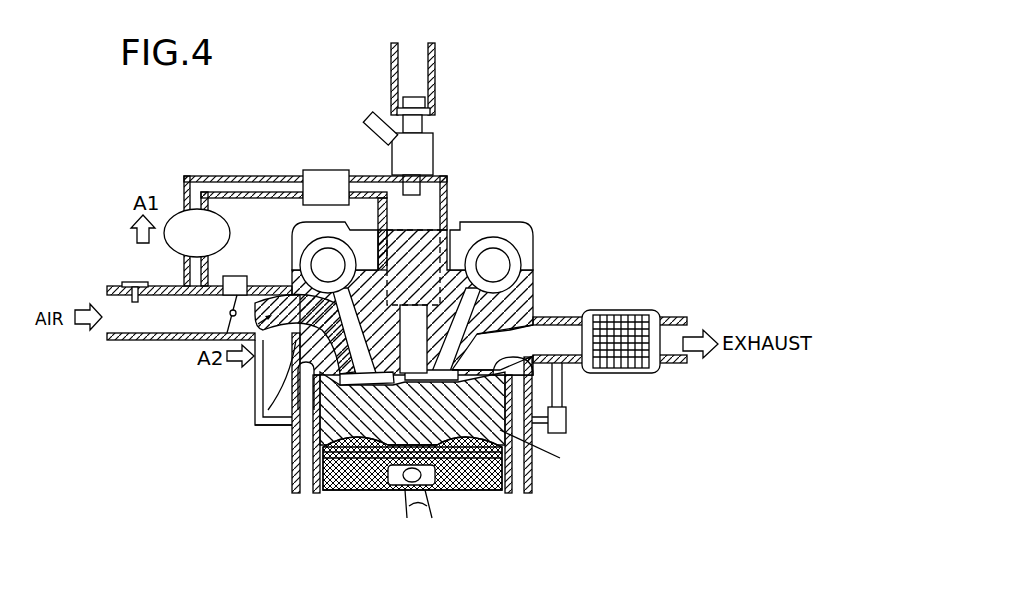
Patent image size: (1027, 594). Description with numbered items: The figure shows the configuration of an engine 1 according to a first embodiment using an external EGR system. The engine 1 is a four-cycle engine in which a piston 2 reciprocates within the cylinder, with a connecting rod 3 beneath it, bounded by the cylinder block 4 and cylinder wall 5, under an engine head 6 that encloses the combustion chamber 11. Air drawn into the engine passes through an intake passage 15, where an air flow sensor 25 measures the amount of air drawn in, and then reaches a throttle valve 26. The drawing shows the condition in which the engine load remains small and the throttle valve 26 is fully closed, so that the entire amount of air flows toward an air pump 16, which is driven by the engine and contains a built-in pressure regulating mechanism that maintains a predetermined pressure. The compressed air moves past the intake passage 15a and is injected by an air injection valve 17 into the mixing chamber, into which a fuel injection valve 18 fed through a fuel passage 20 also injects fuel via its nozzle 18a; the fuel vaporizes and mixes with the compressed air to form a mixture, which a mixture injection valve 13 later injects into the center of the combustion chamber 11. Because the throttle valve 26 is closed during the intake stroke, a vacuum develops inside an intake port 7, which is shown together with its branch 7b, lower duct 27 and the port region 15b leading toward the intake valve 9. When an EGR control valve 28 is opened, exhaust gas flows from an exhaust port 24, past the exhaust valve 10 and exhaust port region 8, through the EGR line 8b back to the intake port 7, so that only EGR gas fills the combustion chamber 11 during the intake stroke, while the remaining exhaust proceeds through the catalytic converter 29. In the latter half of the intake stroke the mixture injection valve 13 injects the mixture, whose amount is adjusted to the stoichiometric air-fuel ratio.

The engine 1 is at (177, 472).
The piston 2 is at (335, 492).
The connecting rod 3 is at (410, 520).
The cylinder block 4 is at (289, 478).
The cylinder 5 is at (303, 436).
The engine head 6 is at (528, 282).
The intake port 7 is at (256, 376).
The branch intake passage 7b is at (300, 390).
The exhaust port 8 is at (514, 336).
The EGR passage 8b is at (510, 375).
The intake valve 9 is at (323, 260).
The exhaust valve 10 is at (512, 243).
The combustion chamber 11 is at (460, 440).
The mixture injection valve 13 is at (449, 192).
The intake passage 15 is at (127, 320).
The intake passage 15a is at (241, 188).
The intake port 15b is at (257, 304).
The air pump 16 is at (180, 208).
The air injection valve 17 is at (325, 170).
The fuel injection valve 18 is at (426, 148).
The fuel injection nozzle 18a is at (366, 116).
The fuel passage 20 is at (408, 70).
The exhaust port 24 is at (556, 338).
The air flow sensor 25 is at (124, 276).
The throttle valve 26 is at (226, 322).
The intake duct bottom 27 is at (253, 418).
The EGR control valve 28 is at (567, 421).
The catalytic converter 29 is at (657, 374).